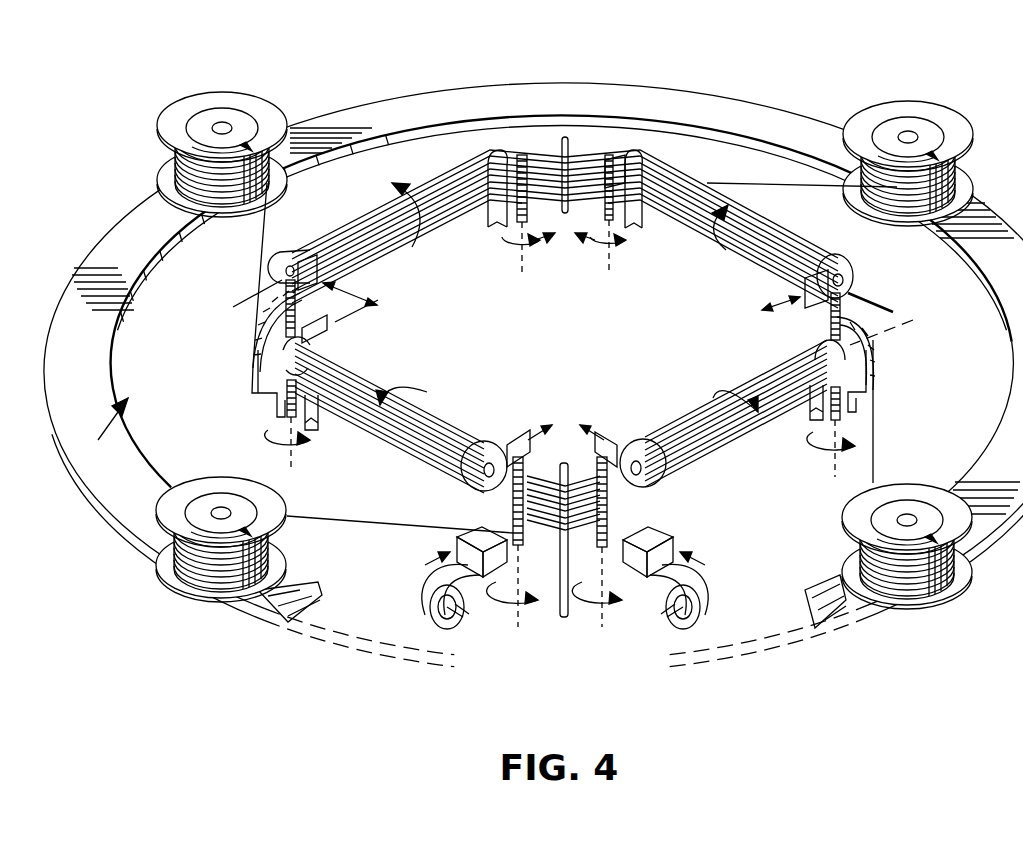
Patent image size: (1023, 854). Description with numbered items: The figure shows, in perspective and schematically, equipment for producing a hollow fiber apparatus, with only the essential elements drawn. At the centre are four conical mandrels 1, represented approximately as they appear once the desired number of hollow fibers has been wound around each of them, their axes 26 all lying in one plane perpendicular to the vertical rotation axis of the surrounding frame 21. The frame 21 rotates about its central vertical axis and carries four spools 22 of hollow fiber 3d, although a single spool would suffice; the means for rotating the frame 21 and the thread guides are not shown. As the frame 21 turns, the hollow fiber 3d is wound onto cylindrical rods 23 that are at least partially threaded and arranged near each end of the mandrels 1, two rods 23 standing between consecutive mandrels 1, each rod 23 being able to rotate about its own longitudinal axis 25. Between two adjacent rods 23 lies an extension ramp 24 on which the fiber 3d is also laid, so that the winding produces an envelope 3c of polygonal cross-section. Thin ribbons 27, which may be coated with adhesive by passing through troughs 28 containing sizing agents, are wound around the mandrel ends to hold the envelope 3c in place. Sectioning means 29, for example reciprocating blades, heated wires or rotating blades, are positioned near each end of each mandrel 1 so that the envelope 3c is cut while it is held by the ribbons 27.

The conical mandrel 1 is at (787, 240).
The frame 21 is at (432, 105).
The spool 22 is at (205, 102).
The cylindrical rod 23 is at (590, 210).
The extension ramp 24 is at (578, 140).
The longitudinal axis 25 is at (840, 447).
The axis of mandrel 26 is at (862, 293).
The ribbon 27 is at (830, 258).
The trough 28 is at (460, 543).
The means for sectioning 29 is at (322, 337).
The envelope of polygonal cross-section 3c is at (553, 155).
The hollow fiber 3d is at (262, 273).